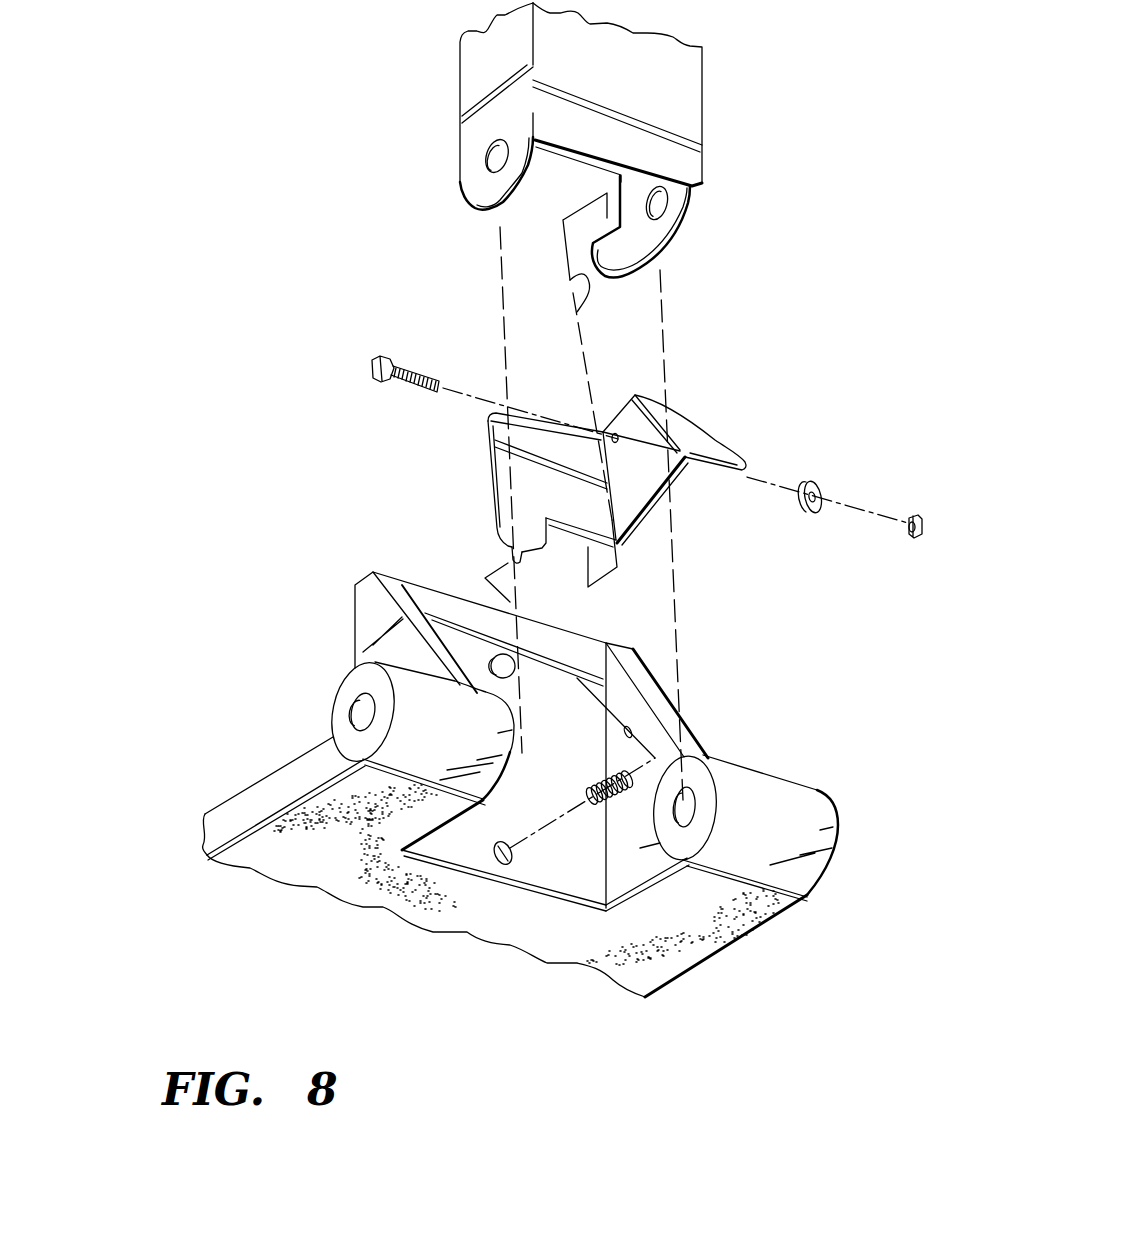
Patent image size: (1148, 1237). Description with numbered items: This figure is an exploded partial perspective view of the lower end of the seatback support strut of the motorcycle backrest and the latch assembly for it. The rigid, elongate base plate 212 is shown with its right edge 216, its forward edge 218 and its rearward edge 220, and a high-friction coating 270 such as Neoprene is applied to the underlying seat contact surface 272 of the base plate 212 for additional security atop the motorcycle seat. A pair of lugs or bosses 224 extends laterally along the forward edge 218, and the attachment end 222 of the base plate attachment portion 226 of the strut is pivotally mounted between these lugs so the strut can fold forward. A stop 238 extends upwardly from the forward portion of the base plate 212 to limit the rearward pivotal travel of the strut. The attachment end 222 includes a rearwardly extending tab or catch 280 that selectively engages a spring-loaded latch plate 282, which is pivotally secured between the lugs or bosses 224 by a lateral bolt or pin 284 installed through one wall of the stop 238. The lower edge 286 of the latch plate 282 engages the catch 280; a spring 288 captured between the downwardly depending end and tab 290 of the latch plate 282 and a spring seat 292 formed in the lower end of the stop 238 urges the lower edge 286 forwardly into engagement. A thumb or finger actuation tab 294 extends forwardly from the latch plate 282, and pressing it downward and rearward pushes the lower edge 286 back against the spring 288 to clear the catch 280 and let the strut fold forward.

The base plate 212 is at (177, 819).
The right edge 216 is at (272, 786).
The forward edge 218 is at (795, 800).
The rearward edge 220 is at (733, 928).
The attachment end 222 is at (463, 88).
The lugs or bosses 224 is at (465, 733).
The base plate attachment portion 226 is at (690, 108).
The stop 238 is at (357, 605).
The coating 270 is at (352, 870).
The seat contact surface 272 is at (245, 832).
The tab or catch 280 is at (588, 290).
The latch plate 282 is at (720, 396).
The lateral bolt or pin 284 is at (394, 362).
The lower edge 286 is at (572, 540).
The spring 288 is at (627, 790).
The downwardly depending end and tab 290 is at (512, 553).
The spring seat 292 is at (512, 862).
The thumb or finger actuation tab 294 is at (745, 462).